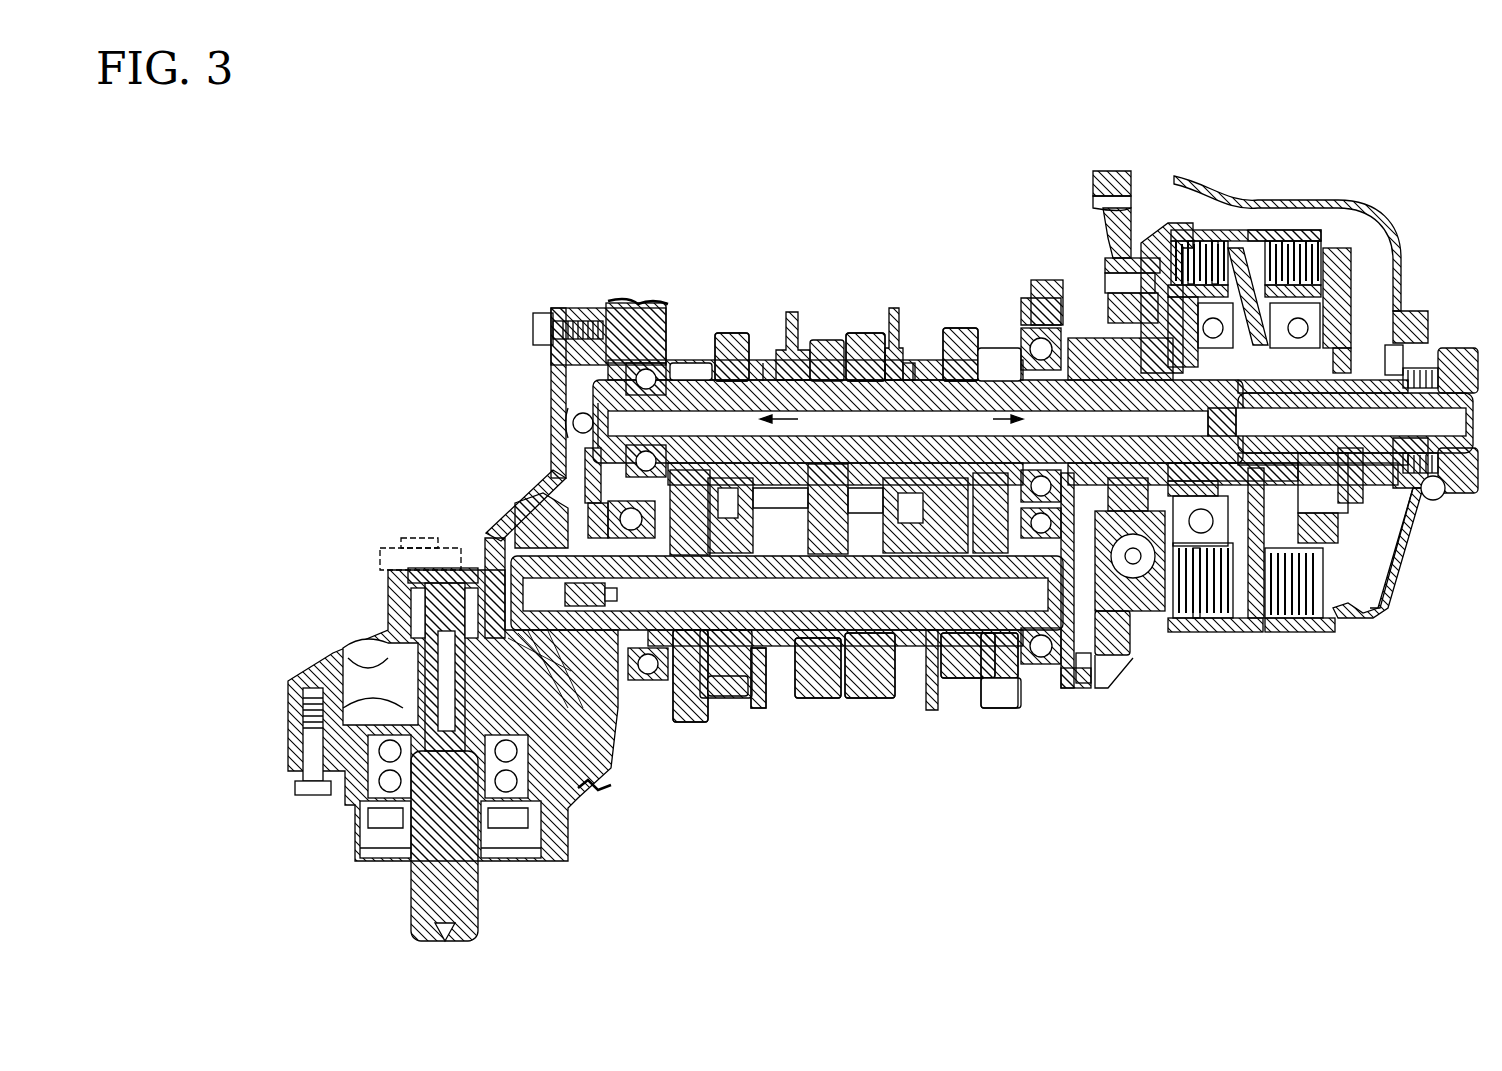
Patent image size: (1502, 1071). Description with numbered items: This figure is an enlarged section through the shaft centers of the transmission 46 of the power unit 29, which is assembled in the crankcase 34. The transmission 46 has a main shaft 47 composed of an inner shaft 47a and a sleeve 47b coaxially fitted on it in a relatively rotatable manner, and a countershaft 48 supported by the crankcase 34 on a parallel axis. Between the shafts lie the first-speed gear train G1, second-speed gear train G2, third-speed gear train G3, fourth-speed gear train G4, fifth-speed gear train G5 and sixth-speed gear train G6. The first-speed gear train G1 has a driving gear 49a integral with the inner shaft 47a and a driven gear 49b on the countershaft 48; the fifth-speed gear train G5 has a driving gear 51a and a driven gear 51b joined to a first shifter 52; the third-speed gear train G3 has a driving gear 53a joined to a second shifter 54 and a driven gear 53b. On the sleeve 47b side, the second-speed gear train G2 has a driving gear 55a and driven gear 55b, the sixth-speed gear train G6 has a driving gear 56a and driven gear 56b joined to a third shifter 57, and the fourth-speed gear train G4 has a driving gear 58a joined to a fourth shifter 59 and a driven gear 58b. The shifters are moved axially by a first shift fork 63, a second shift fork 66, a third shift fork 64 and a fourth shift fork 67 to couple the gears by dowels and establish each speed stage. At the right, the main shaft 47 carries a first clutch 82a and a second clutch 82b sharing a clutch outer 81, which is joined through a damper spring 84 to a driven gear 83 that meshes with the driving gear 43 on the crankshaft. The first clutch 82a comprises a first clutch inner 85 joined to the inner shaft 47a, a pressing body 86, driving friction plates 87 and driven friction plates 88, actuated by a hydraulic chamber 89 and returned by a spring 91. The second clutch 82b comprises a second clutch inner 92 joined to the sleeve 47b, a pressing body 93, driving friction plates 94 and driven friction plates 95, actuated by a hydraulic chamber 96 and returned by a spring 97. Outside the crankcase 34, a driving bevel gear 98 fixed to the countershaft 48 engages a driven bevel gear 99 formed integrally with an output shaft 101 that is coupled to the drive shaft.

The power unit 29 is at (1383, 187).
The crankcase 34 is at (605, 287).
The driving gear 43 is at (1085, 172).
The transmission 46 is at (780, 610).
The main shaft 47 is at (633, 376).
The inner shaft 47a is at (748, 364).
The sleeve 47b is at (898, 362).
The countershaft 48 is at (930, 665).
The driving gear 49a is at (678, 347).
The driven gear 49b is at (713, 672).
The driving gear 51a is at (718, 317).
The driven gear 51b is at (718, 665).
The first shifter 52 is at (748, 659).
The driving gear 53a is at (812, 324).
The driven gear 53b is at (803, 652).
The second shifter 54 is at (762, 337).
The driving gear 55a is at (973, 332).
The driven gear 55b is at (983, 692).
The driving gear 56a is at (940, 312).
The driven gear 56b is at (965, 667).
The third shifter 57 is at (913, 640).
The driving gear 58a is at (851, 317).
The driven gear 58b is at (858, 659).
The fourth shifter 59 is at (895, 347).
The first shift fork 63 is at (745, 684).
The third shift fork 64 is at (938, 665).
The second shift fork 66 is at (833, 317).
The fourth shift fork 67 is at (878, 294).
The clutch outer 81 is at (1188, 204).
The first clutch 82a is at (1288, 619).
The second clutch 82b is at (1198, 609).
The driven gear 83 is at (1098, 215).
The damper spring 84 is at (1148, 585).
The first clutch inner 85 is at (1201, 604).
The pressing body 86 is at (1348, 603).
The driving friction plates 87 is at (1283, 222).
The driven friction plates 88 is at (1250, 604).
The hydraulic chamber 89 is at (1303, 497).
The spring 91 is at (1313, 480).
The second clutch inner 92 is at (1148, 277).
The pressing body 93 is at (1233, 217).
The driving friction plates 94 is at (1183, 227).
The driven friction plates 95 is at (1208, 227).
The hydraulic chamber 96 is at (1299, 317).
The spring 97 is at (1090, 254).
The driving bevel gear 98 is at (523, 509).
The driven bevel gear 99 is at (298, 670).
The output shaft 101 is at (458, 857).
The first-speed gear train G1 is at (676, 697).
The second-speed gear train G2 is at (993, 689).
The third-speed gear train G3 is at (797, 664).
The fourth-speed gear train G4 is at (860, 667).
The fifth-speed gear train G5 is at (718, 317).
The sixth-speed gear train G6 is at (941, 312).